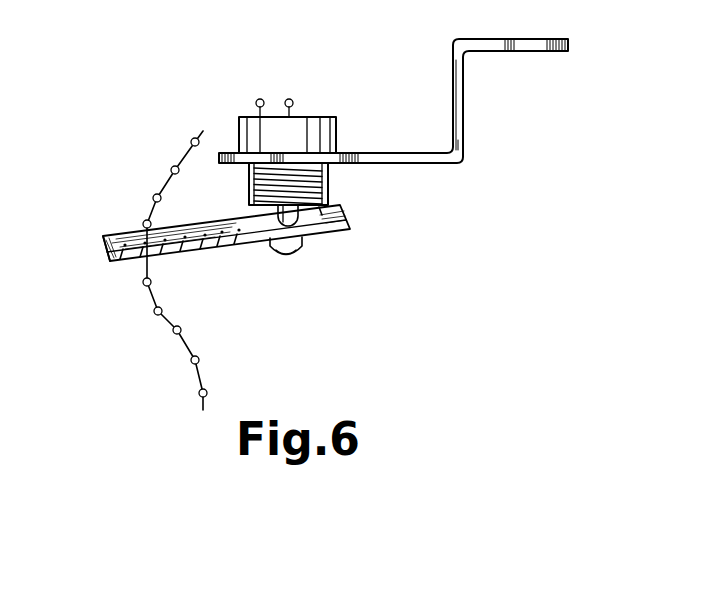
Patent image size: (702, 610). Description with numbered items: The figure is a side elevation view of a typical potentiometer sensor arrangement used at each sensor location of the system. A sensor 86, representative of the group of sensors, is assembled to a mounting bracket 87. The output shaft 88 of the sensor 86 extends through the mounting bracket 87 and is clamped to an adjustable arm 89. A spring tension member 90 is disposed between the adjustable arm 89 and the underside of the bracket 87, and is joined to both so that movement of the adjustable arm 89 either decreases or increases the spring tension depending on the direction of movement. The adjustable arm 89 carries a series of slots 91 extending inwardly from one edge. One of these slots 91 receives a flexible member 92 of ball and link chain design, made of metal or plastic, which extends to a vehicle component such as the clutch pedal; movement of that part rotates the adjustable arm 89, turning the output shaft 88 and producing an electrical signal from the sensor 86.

The sensor 86 is at (322, 117).
The mounting bracket 87 is at (463, 150).
The output shaft 88 is at (292, 249).
The adjustable arm 89 is at (253, 229).
The spring tension member 90 is at (330, 184).
The slots 91 is at (107, 255).
The flexible member 92 is at (172, 172).